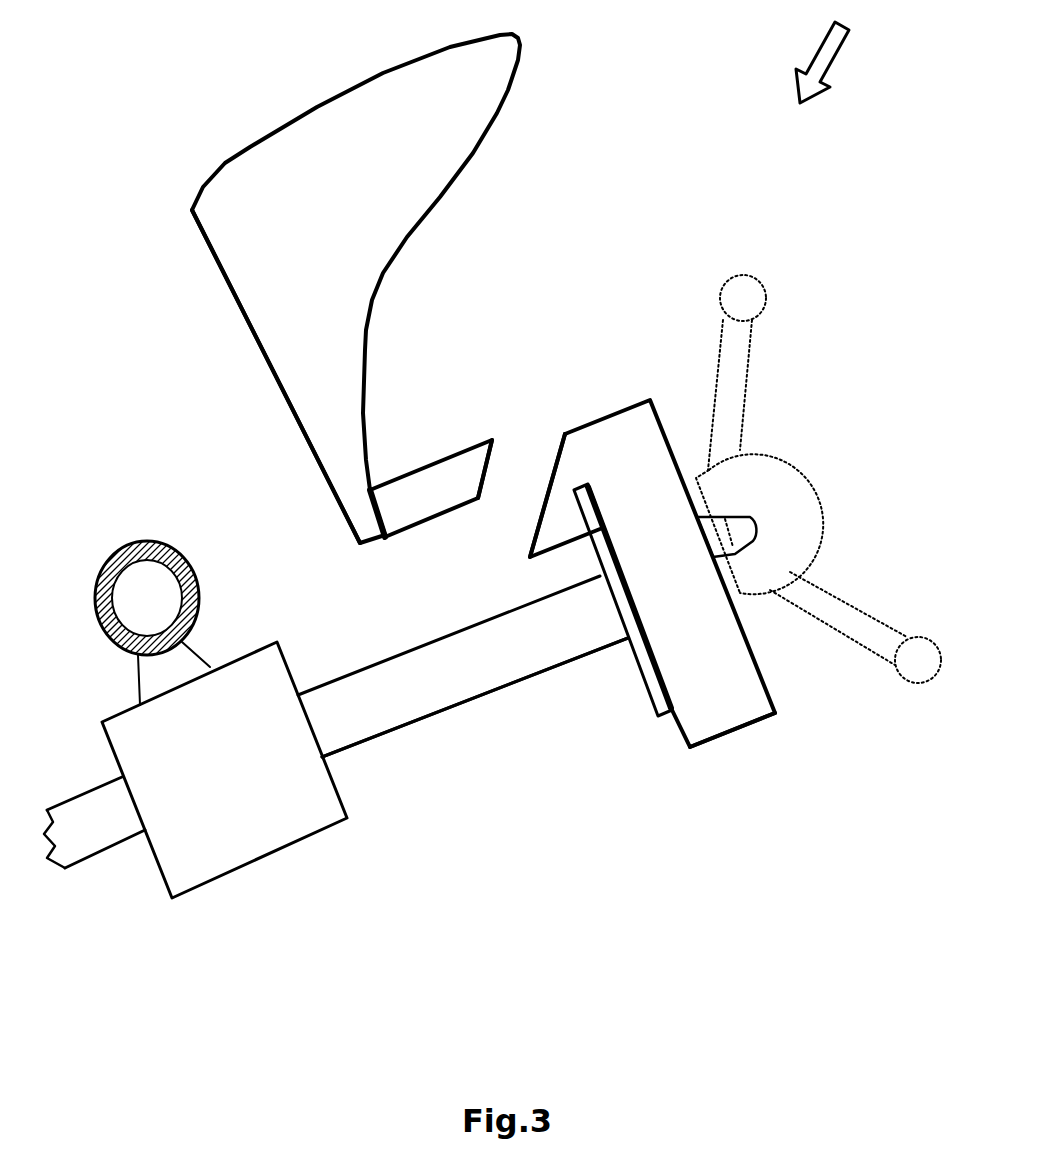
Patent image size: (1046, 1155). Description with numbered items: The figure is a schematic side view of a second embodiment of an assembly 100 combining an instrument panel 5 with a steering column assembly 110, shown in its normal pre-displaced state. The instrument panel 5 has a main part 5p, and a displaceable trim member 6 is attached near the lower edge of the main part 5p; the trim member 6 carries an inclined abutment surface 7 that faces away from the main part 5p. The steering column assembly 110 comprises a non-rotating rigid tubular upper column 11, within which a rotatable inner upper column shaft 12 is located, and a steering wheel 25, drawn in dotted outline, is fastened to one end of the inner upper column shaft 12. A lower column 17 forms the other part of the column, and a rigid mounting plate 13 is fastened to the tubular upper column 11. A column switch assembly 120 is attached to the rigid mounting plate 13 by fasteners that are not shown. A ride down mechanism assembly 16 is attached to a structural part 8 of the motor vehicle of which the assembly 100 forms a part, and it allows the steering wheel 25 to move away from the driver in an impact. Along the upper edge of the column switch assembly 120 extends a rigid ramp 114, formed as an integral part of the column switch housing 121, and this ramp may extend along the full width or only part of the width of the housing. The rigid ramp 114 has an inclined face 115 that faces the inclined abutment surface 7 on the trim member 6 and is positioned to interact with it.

The assembly 100 is at (839, 51).
The instrument panel 5 is at (267, 132).
The main part 5p is at (307, 280).
The trim member 6 is at (392, 478).
The inclined abutment surface 7 is at (483, 473).
The structural part 8 is at (112, 552).
The tubular upper column 11 is at (438, 718).
The inner upper column shaft 12 is at (757, 527).
The rigid mounting plate 13 is at (633, 663).
The ride down mechanism assembly 16 is at (267, 860).
The lower column 17 is at (100, 857).
The steering wheel 25 is at (768, 302).
The steering column assembly 110 is at (407, 727).
The rigid ramp 114 is at (537, 528).
The inclined face 115 is at (557, 467).
The column switch assembly 120 is at (703, 748).
The column switch housing 121 is at (732, 733).